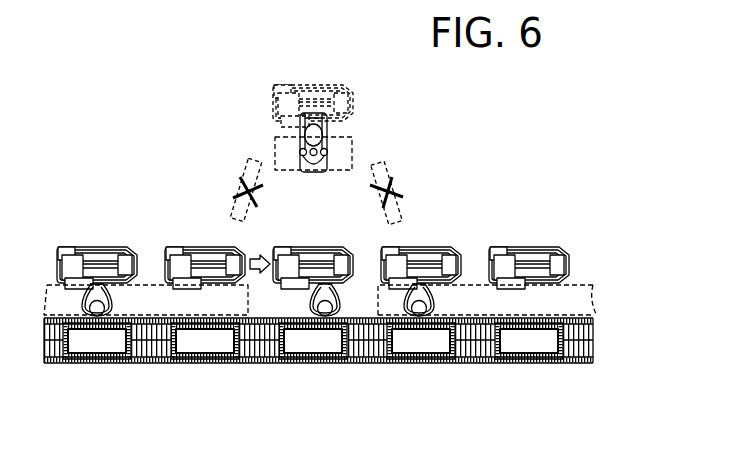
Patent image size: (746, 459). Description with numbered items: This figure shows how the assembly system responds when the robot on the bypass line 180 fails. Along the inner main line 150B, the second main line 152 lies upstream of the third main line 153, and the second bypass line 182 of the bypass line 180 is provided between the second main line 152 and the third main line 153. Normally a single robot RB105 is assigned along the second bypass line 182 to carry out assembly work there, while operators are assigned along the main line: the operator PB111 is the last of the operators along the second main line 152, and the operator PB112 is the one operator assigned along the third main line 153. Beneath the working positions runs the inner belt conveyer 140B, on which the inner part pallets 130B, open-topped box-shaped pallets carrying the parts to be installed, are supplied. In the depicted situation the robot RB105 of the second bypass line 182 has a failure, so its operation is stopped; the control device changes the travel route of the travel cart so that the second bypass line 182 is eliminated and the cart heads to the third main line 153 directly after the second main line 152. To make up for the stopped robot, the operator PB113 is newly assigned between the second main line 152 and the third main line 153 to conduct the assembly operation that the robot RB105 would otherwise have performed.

The robot RB105 is at (300, 140).
The bypass line 180 is at (313, 155).
The second bypass line 182 is at (287, 175).
The second main line 152 is at (153, 282).
The third main line 153 is at (470, 282).
The inner main line 150B is at (368, 262).
The operator PB111 is at (131, 305).
The operator PB113 is at (367, 303).
The operator PB112 is at (455, 303).
The inner part pallet 130B is at (292, 334).
The inner belt conveyer 140B is at (347, 375).